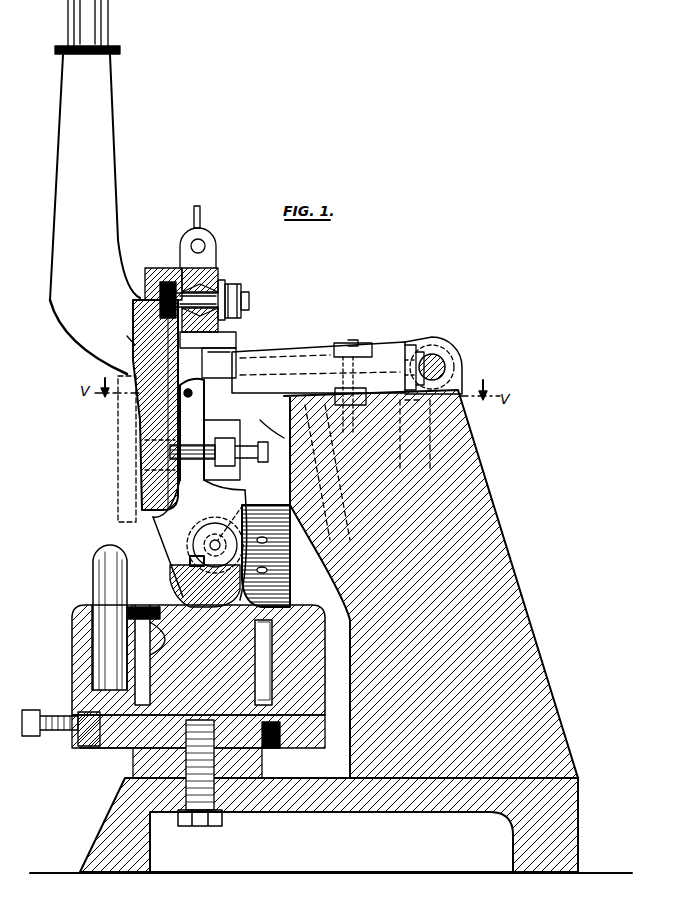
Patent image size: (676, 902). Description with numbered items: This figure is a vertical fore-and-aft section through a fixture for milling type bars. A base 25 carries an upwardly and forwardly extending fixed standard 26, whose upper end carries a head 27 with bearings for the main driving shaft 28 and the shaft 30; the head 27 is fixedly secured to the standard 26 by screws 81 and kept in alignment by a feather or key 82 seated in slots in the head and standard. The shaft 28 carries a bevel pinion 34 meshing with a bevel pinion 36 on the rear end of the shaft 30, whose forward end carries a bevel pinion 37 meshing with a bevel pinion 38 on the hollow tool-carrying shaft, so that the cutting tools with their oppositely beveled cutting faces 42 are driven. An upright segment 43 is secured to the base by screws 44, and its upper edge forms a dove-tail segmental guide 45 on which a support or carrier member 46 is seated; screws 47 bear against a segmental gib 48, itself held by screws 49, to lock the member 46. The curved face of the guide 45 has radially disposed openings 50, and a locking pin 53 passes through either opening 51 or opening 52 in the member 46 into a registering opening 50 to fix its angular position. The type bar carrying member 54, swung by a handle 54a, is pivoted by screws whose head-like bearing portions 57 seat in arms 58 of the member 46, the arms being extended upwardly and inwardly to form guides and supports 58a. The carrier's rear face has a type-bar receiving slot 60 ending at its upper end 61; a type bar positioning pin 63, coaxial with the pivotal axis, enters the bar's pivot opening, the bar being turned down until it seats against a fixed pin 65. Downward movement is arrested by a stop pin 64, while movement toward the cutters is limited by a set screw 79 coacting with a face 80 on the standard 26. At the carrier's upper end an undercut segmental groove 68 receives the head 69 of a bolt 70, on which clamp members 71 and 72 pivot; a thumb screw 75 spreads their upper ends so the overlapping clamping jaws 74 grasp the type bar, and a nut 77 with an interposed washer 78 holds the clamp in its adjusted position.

The base 25 is at (329, 825).
The standard 26 is at (500, 555).
The head 27 is at (405, 350).
The main driving shaft 28 is at (445, 360).
The shaft 30 is at (278, 350).
The bevel pinion 34 is at (438, 345).
The bevel pinion 36 is at (420, 352).
The bevel pinion 37 is at (236, 352).
The bevel pinion 38 is at (165, 395).
The beveled cutting face 42 is at (150, 360).
The upright segment 43 is at (134, 770).
The screws 44 is at (200, 826).
The segmental guide 45 is at (292, 762).
The support or carrier member 46 is at (72, 666).
The screws 47 is at (50, 721).
The segmental gib 48 is at (115, 746).
The screws 49 is at (72, 730).
The radially disposed openings 50 is at (292, 554).
The opening 51 is at (160, 622).
The opening 52 is at (262, 632).
The locking pin 53 is at (165, 640).
The type bar carrying member 54 is at (140, 420).
The handle 54a is at (95, 187).
The head-like bearing portions 57 is at (238, 535).
The standards or arms 58 is at (205, 492).
The guides and supports 58a is at (145, 440).
The type-bar receiving slot 60 is at (205, 430).
The upper end of slot 61 is at (193, 393).
The type bar positioning pin 63 is at (251, 472).
The stop pin 64 is at (93, 562).
The fixed pin 65 is at (120, 372).
The undercut segmental groove 68 is at (160, 268).
The bolt head 69 is at (168, 282).
The bolt 70 is at (249, 302).
The clamp member 71 is at (216, 250).
The clamp member 72 is at (218, 270).
The clamping jaw 74 is at (236, 336).
The thumb screw 75 is at (201, 208).
The nut 77 is at (241, 292).
The washer 78 is at (225, 285).
The set screw 79 is at (246, 462).
The face 80 is at (268, 410).
The screws 81 is at (350, 343).
The feather or key 82 is at (335, 394).